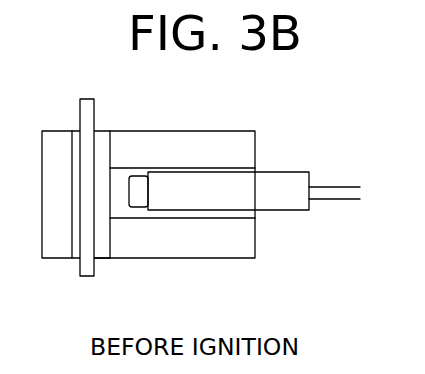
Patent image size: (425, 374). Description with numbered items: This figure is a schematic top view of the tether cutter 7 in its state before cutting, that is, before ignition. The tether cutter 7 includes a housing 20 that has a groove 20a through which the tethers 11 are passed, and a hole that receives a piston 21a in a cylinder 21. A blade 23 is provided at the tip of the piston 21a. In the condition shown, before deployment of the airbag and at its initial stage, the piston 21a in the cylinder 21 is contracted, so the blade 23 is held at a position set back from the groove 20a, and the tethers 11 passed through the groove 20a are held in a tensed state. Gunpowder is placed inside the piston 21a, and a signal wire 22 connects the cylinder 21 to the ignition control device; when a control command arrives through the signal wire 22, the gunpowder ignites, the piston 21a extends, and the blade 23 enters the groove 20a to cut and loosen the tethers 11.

The tether cutter 7 is at (213, 113).
The tether 11 is at (83, 98).
The housing 20 is at (217, 260).
The groove 20a is at (103, 258).
The cylinder 21 is at (270, 172).
The piston 21a is at (140, 180).
The signal wire 22 is at (342, 187).
The blade 23 is at (102, 198).